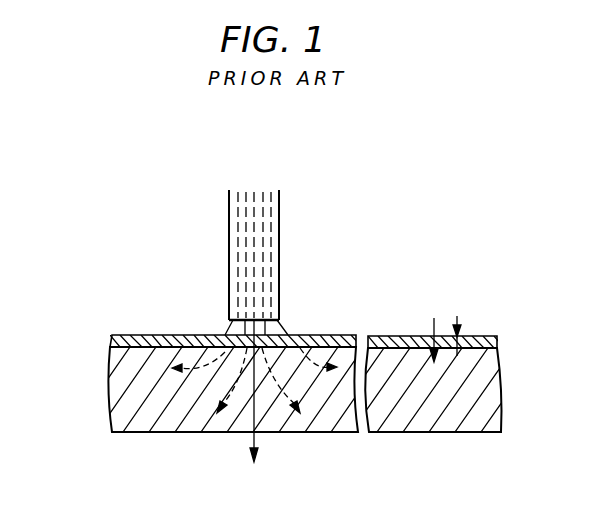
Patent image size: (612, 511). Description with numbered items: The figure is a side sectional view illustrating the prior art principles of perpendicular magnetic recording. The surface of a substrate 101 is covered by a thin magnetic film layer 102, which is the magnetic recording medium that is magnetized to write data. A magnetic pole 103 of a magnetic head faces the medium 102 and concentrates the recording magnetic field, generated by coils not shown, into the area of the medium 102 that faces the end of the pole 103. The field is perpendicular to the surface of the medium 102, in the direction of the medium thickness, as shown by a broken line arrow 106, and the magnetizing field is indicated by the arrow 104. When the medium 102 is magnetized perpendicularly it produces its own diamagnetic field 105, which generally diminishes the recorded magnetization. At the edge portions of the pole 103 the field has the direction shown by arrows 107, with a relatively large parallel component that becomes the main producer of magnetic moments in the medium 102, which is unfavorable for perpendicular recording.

The substrate 101 is at (123, 395).
The thin magnetic film layer 102 is at (127, 335).
The magnetic pole 103 is at (281, 248).
The magnetizing field 104 is at (431, 332).
The diamagnetic field 105 is at (460, 328).
The broken line arrow 106 is at (255, 418).
The arrows 107 is at (209, 348).